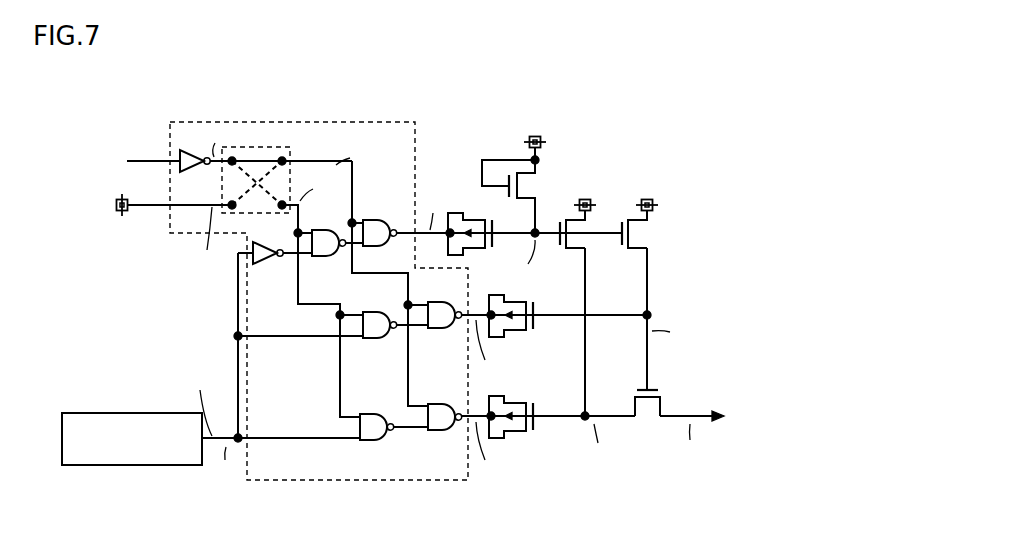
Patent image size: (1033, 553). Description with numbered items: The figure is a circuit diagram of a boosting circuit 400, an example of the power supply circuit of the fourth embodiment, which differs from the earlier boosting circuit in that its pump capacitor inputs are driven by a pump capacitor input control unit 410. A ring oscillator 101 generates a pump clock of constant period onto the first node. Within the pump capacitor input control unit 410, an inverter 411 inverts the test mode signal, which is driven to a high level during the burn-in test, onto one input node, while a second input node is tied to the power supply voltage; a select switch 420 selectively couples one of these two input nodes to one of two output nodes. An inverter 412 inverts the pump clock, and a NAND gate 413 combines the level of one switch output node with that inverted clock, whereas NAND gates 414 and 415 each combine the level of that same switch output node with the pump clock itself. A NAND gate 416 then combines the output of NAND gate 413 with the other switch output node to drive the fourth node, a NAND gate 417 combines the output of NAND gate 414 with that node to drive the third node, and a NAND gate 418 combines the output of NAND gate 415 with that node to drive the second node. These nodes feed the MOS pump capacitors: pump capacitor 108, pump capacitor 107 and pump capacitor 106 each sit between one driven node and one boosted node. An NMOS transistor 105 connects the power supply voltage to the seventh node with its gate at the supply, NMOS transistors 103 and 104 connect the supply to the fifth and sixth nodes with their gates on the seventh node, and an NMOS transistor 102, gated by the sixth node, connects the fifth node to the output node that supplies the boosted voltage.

The boosting circuit 400 is at (707, 97).
The pump capacitor input control unit 410 is at (388, 122).
The select switch 420 is at (275, 147).
The inverter 411 is at (187, 146).
The inverter 412 is at (265, 264).
The NAND gate 413 is at (323, 258).
The NAND gate 414 is at (375, 339).
The NAND gate 415 is at (374, 441).
The NAND gate 416 is at (380, 220).
The NAND gate 417 is at (440, 329).
The NAND gate 418 is at (442, 432).
The pump capacitor 108 is at (455, 210).
The pump capacitor 107 is at (509, 299).
The pump capacitor 106 is at (509, 401).
The NMOS transistor 105 is at (530, 190).
The NMOS transistor 103 is at (578, 240).
The NMOS transistor 104 is at (636, 234).
The NMOS transistor 102 is at (648, 424).
The ring oscillator 101 is at (153, 466).